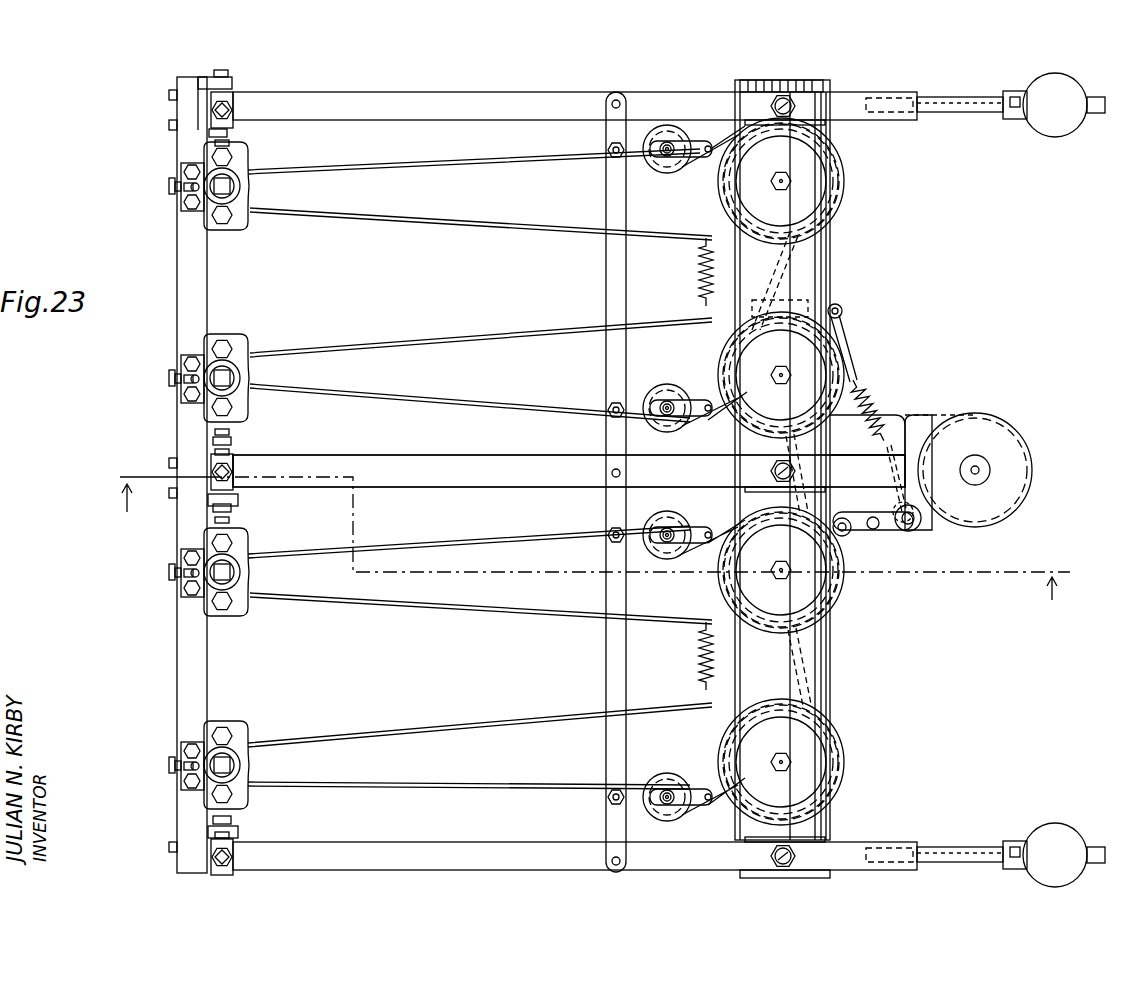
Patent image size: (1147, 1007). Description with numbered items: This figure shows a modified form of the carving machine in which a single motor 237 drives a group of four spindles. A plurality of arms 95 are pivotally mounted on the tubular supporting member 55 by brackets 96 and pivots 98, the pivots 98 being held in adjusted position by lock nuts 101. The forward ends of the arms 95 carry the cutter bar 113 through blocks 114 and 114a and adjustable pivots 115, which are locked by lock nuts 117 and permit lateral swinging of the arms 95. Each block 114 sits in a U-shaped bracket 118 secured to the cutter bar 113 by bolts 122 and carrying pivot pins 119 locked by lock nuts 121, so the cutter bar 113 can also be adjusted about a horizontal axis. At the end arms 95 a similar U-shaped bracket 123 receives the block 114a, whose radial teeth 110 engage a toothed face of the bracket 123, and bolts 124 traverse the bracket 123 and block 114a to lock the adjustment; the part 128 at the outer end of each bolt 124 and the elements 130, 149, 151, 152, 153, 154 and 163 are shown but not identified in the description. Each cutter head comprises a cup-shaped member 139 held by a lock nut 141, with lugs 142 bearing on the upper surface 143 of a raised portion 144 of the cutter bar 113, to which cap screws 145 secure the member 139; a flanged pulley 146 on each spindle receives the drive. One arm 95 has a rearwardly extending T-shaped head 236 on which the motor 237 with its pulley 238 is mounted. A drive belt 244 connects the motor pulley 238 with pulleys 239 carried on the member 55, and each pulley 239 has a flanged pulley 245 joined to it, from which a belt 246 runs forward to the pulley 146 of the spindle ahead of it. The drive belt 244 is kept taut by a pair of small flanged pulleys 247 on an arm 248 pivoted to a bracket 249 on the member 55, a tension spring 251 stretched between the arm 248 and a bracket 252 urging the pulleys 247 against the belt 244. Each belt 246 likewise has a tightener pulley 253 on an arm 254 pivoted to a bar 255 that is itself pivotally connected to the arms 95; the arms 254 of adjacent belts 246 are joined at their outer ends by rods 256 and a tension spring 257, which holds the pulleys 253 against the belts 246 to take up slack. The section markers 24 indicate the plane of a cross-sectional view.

The section line 24 is at (586, 533).
The tubular supporting member 55 is at (832, 663).
The arms 95 is at (496, 110).
The brackets 96 is at (775, 490).
The pivots 98 is at (795, 104).
The lock nuts 101 is at (826, 122).
The radial teeth 110 is at (230, 132).
The cutter bar 113 is at (178, 688).
The blocks 114 is at (232, 488).
The blocks 114a is at (232, 122).
The pivots 115 is at (232, 104).
The lock nuts 117 is at (232, 114).
The U-shaped bracket 118 is at (236, 500).
The pivot pins 119 is at (232, 452).
The lock nuts 121 is at (232, 440).
The bolts 122 is at (169, 95).
The U-shaped bracket 123 is at (234, 82).
The bolts 124 is at (232, 142).
The handle 128 is at (1000, 110).
The shaft 130 is at (245, 358).
The cup-shaped member 139 is at (213, 200).
The lock nut 141 is at (215, 190).
The lugs 142 is at (236, 228).
The upper surface 143 is at (250, 172).
The raised portion 144 is at (250, 178).
The cap screws 145 is at (236, 222).
The flanged pulley 146 is at (252, 206).
The square shaft 149 is at (252, 188).
The screw 151 is at (175, 192).
The plate 152 is at (190, 168).
The plate 153 is at (182, 590).
The bracket plate 154 is at (182, 168).
The thumb screw 163 is at (170, 187).
The T-shaped head 236 is at (922, 418).
The motor 237 is at (985, 455).
The pulley 238 is at (962, 520).
The pulleys 239 is at (832, 166).
The drive belt 244 is at (886, 410).
The flanged pulley 245 is at (845, 186).
The belt 246 is at (530, 224).
The small flanged pulleys 247 is at (843, 520).
The arm 248 is at (888, 535).
The bracket 249 is at (872, 530).
The tension spring 251 is at (880, 420).
The bracket 252 is at (840, 306).
The pulley 253 is at (666, 174).
The arm 254 is at (700, 145).
The bar 255 is at (612, 296).
The rods 256 is at (706, 226).
The tension spring 257 is at (700, 300).